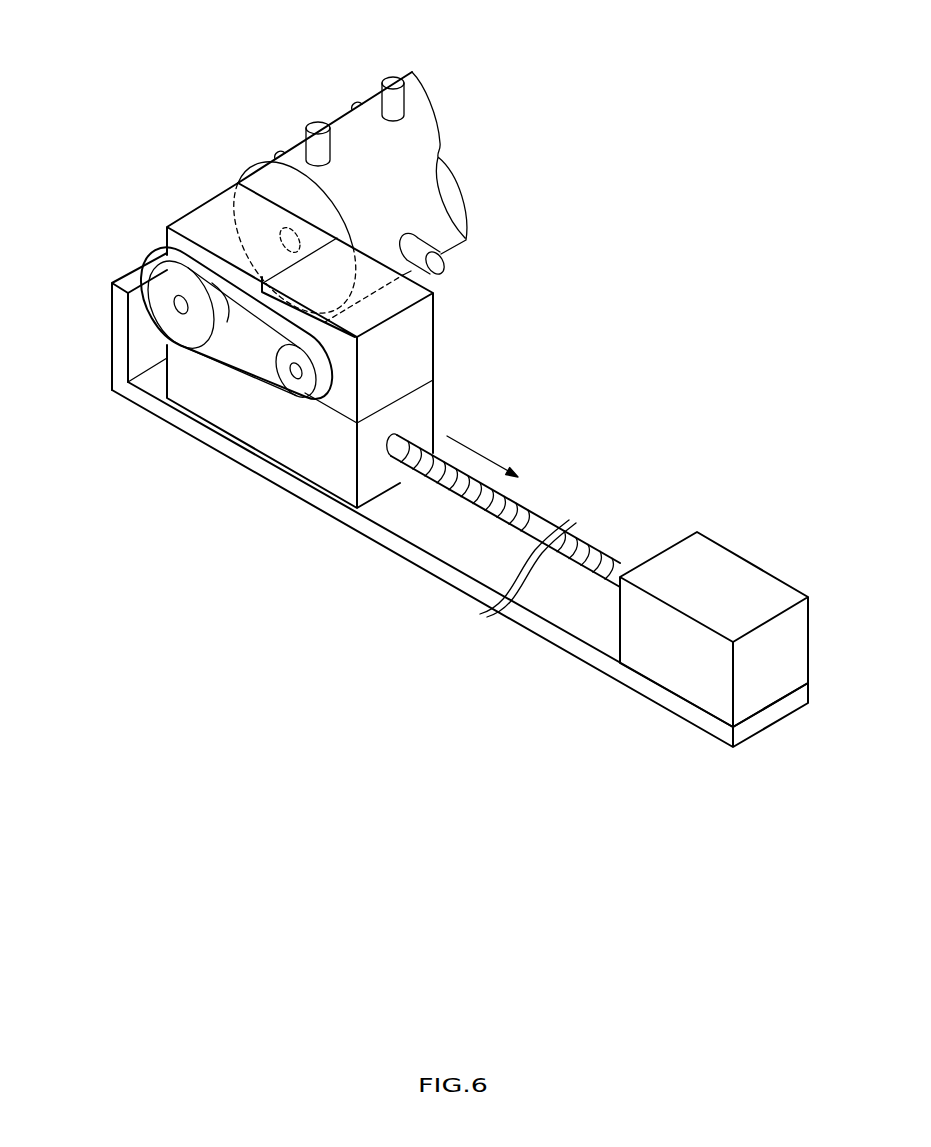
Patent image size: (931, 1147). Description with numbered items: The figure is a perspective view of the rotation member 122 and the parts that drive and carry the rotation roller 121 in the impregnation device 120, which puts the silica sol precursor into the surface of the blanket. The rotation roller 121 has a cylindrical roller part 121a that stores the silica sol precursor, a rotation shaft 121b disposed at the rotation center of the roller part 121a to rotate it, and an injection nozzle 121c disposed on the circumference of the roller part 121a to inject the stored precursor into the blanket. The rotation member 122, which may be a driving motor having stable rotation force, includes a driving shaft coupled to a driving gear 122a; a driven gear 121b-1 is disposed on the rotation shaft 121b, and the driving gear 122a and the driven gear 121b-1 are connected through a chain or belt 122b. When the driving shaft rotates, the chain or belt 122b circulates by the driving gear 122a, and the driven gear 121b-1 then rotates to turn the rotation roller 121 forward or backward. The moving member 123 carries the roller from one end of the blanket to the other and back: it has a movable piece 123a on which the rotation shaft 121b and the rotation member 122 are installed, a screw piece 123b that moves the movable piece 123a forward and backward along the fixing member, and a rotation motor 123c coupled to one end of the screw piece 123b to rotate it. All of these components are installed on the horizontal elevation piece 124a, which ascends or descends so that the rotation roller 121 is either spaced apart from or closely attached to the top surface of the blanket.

The impregnation device 120 is at (706, 103).
The rotation roller 121 is at (343, 9).
The roller part 121a is at (338, 128).
The rotation shaft 121b is at (291, 232).
The driven gear 121b-1 is at (183, 326).
The injection nozzle 121c is at (393, 82).
The rotation member 122 is at (343, 392).
The driving gear 122a is at (297, 383).
The chain or belt 122b is at (237, 360).
The moving member 123 is at (698, 413).
The movable piece 123a is at (420, 410).
The screw piece 123b is at (527, 513).
The rotation motor 123c is at (683, 550).
The elevation piece 124a is at (672, 698).